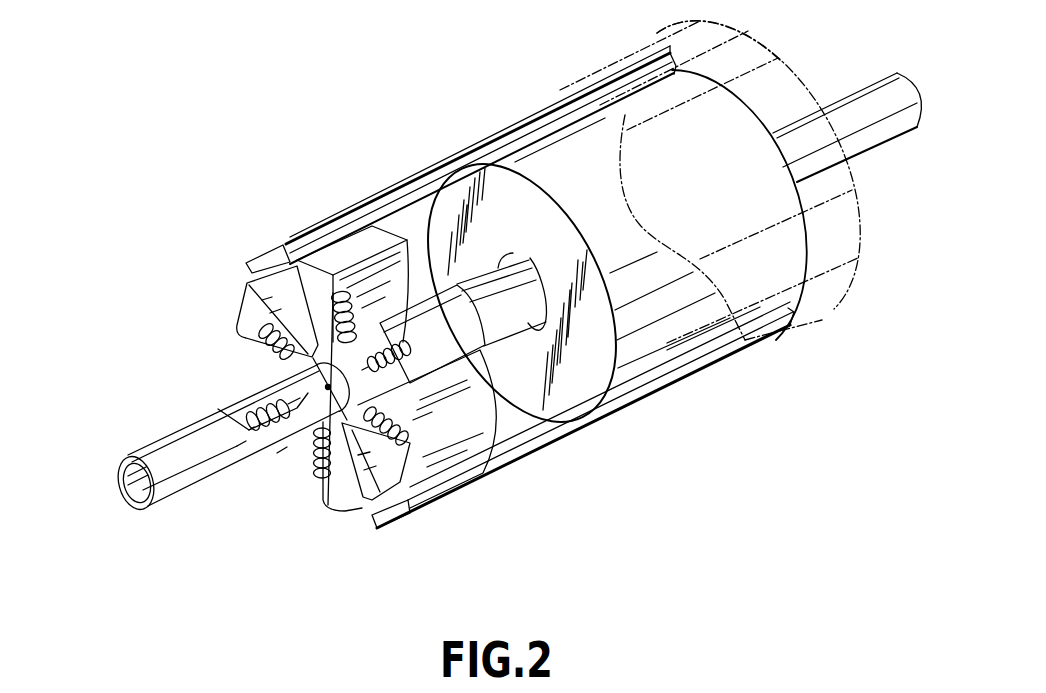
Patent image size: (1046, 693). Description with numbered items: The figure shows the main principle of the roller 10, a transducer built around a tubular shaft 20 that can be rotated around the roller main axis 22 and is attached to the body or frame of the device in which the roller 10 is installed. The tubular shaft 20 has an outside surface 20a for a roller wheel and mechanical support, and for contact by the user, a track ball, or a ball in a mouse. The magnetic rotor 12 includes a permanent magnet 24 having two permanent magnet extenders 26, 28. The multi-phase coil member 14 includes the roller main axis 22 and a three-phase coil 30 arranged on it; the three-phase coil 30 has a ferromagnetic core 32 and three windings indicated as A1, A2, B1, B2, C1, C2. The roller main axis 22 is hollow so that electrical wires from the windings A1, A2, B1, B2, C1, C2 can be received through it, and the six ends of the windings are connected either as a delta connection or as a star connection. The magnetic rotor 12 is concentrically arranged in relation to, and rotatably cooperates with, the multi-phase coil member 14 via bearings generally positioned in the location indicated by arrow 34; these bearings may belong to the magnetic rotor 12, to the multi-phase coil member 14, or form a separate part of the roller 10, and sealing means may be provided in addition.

The roller 10 is at (292, 50).
The magnetic rotor 12 is at (757, 337).
The multi-phase coil member 14 is at (115, 440).
The tubular shaft 20 is at (866, 224).
The outside surface 20a is at (712, 35).
The roller main axis 22 is at (123, 500).
The permanent magnet 24 is at (673, 337).
The permanent magnet extender 26 is at (377, 529).
The permanent magnet extender 28 is at (256, 263).
The three-phase coil 30 is at (450, 443).
The ferromagnetic core 32 is at (365, 248).
The arrow indicating bearing location 34 is at (490, 250).
The winding A1 is at (245, 331).
The winding A2 is at (413, 437).
The winding B1 is at (333, 292).
The winding B2 is at (323, 481).
The winding C1 is at (430, 358).
The winding C2 is at (218, 406).